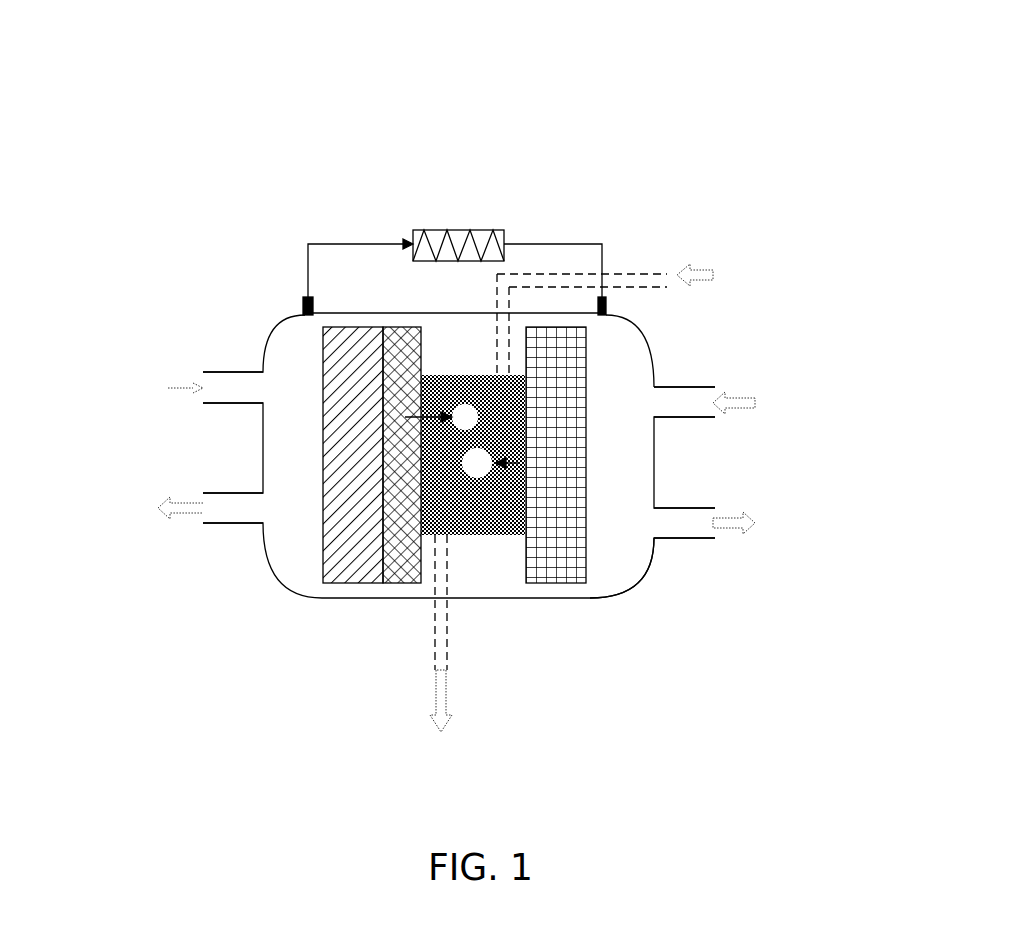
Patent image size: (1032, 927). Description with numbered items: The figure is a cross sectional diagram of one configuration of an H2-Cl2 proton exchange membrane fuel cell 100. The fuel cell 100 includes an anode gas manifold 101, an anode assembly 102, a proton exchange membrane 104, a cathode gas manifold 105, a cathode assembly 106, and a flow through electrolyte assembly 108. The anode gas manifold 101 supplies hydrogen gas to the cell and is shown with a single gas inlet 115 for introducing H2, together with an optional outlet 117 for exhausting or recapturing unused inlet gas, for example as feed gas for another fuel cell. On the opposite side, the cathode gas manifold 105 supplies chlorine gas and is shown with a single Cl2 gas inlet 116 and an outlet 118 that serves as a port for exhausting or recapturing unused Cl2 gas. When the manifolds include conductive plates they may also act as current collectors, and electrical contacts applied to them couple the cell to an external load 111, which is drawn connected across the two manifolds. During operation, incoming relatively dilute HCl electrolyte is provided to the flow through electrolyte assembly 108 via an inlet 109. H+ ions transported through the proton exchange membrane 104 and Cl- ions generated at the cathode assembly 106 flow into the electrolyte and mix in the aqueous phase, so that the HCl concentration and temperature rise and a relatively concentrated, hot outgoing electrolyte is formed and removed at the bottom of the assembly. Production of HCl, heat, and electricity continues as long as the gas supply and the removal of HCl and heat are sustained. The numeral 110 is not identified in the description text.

The fuel cell 100 is at (728, 118).
The anode gas manifold 101 is at (277, 567).
The anode assembly 102 is at (383, 598).
The proton exchange membrane 104 is at (405, 604).
The cathode gas manifold 105 is at (646, 573).
The cathode assembly 106 is at (586, 598).
The flow through electrolyte assembly 108 is at (525, 598).
The inlet 109 is at (663, 273).
The electrolyte outlet 110 is at (447, 656).
The external load 111 is at (458, 230).
The gas inlet 115 is at (217, 370).
The Cl2 gas inlet 116 is at (685, 380).
The outlet 117 is at (217, 530).
The outlet 118 is at (685, 508).